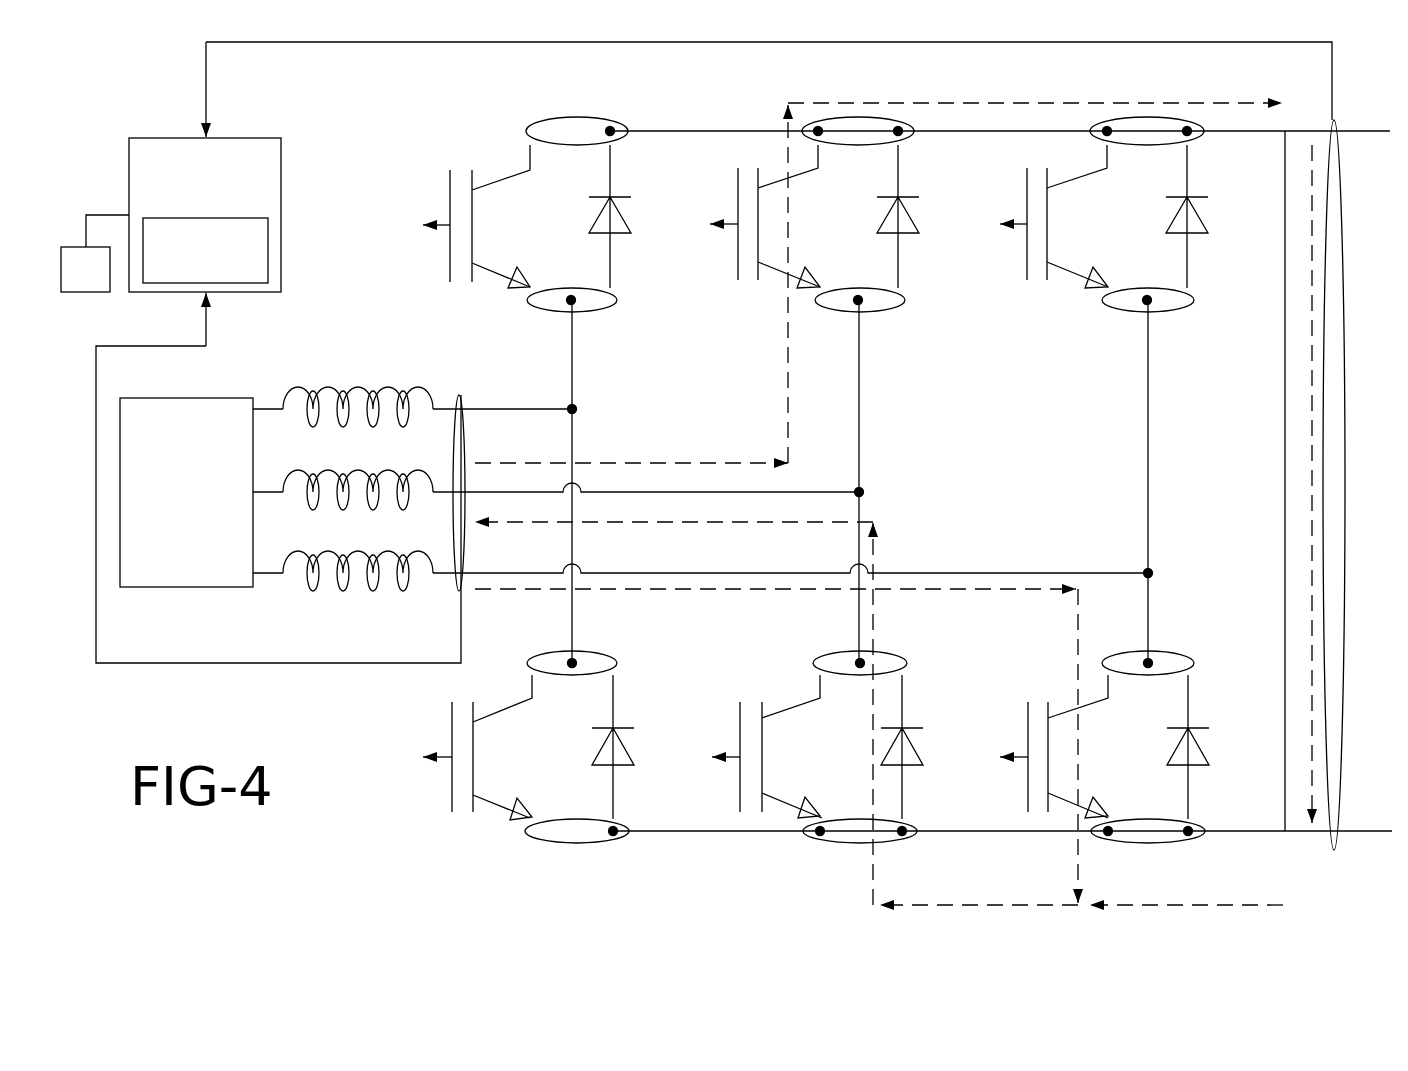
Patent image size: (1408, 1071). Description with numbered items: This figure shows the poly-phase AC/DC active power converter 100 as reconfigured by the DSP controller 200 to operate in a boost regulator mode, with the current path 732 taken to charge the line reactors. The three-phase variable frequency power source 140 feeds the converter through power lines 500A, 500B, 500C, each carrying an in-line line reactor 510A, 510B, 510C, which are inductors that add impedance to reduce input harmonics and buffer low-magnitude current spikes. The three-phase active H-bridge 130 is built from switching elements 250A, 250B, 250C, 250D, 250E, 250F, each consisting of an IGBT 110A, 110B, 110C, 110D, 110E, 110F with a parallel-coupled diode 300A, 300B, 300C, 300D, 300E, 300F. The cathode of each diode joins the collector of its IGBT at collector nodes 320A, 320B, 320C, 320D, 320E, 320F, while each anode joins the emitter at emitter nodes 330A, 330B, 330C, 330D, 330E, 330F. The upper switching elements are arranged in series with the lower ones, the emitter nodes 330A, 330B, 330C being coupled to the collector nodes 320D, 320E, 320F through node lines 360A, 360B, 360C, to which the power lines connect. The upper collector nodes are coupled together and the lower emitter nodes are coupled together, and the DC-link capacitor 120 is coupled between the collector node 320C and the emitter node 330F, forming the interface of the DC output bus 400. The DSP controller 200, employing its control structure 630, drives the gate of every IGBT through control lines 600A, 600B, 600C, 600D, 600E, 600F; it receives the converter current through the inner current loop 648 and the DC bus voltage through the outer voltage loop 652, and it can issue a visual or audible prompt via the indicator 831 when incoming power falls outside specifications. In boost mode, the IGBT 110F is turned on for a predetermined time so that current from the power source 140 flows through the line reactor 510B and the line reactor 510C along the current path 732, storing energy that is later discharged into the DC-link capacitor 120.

The poly-phase AC/DC active power converter 100 is at (108, 150).
The outer voltage loop 652 is at (238, 43).
The DSP controller 200 is at (287, 205).
The control structure 630 is at (228, 284).
The indicator 831 is at (86, 292).
The three-phase variable frequency power source 140 is at (153, 398).
The inner current loop 648 is at (253, 663).
The power line 500A is at (267, 409).
The power line 500B is at (267, 492).
The power line 500C is at (270, 583).
The line reactor 510A is at (397, 392).
The line reactor 510B is at (402, 503).
The line reactor 510C is at (373, 593).
The three-phase active H-bridge 130 is at (607, 82).
The insulated-gate bipolar transistor 110A is at (513, 167).
The insulated-gate bipolar transistor 110B is at (780, 180).
The insulated-gate bipolar transistor 110C is at (1067, 177).
The insulated-gate bipolar transistor 110D is at (497, 805).
The insulated-gate bipolar transistor 110E is at (780, 800).
The insulated-gate bipolar transistor 110F is at (1070, 803).
The switching element 250A is at (542, 110).
The switching element 250B is at (915, 270).
The switching element 250C is at (1093, 330).
The switching element 250D is at (500, 843).
The switching element 250E is at (893, 640).
The switching element 250F is at (1222, 658).
The diode 300A is at (598, 237).
The diode 300B is at (888, 237).
The diode 300C is at (1175, 237).
The diode 300D is at (597, 755).
The diode 300E is at (882, 757).
The diode 300F is at (1203, 753).
The collector node 320A is at (583, 118).
The collector node 320B is at (873, 117).
The collector node 320C is at (1140, 117).
The collector node 320D is at (583, 653).
The collector node 320E is at (840, 653).
The collector node 320F is at (1142, 673).
The emitter node 330A is at (530, 303).
The emitter node 330B is at (825, 307).
The emitter node 330C is at (1107, 303).
The emitter node 330D is at (573, 847).
The emitter node 330E is at (883, 845).
The emitter node 330F is at (1137, 845).
The control line 600A is at (443, 228).
The control line 600B is at (728, 222).
The control line 600C is at (1022, 222).
The control line 600D is at (448, 757).
The control line 600E is at (737, 757).
The control line 600F is at (1013, 757).
The node line 360A is at (572, 442).
The node line 360B is at (859, 442).
The node line 360C is at (1147, 508).
The DC-link capacitor 120 is at (1285, 460).
The DC output bus 400 is at (1337, 120).
The current path 732 is at (972, 103).